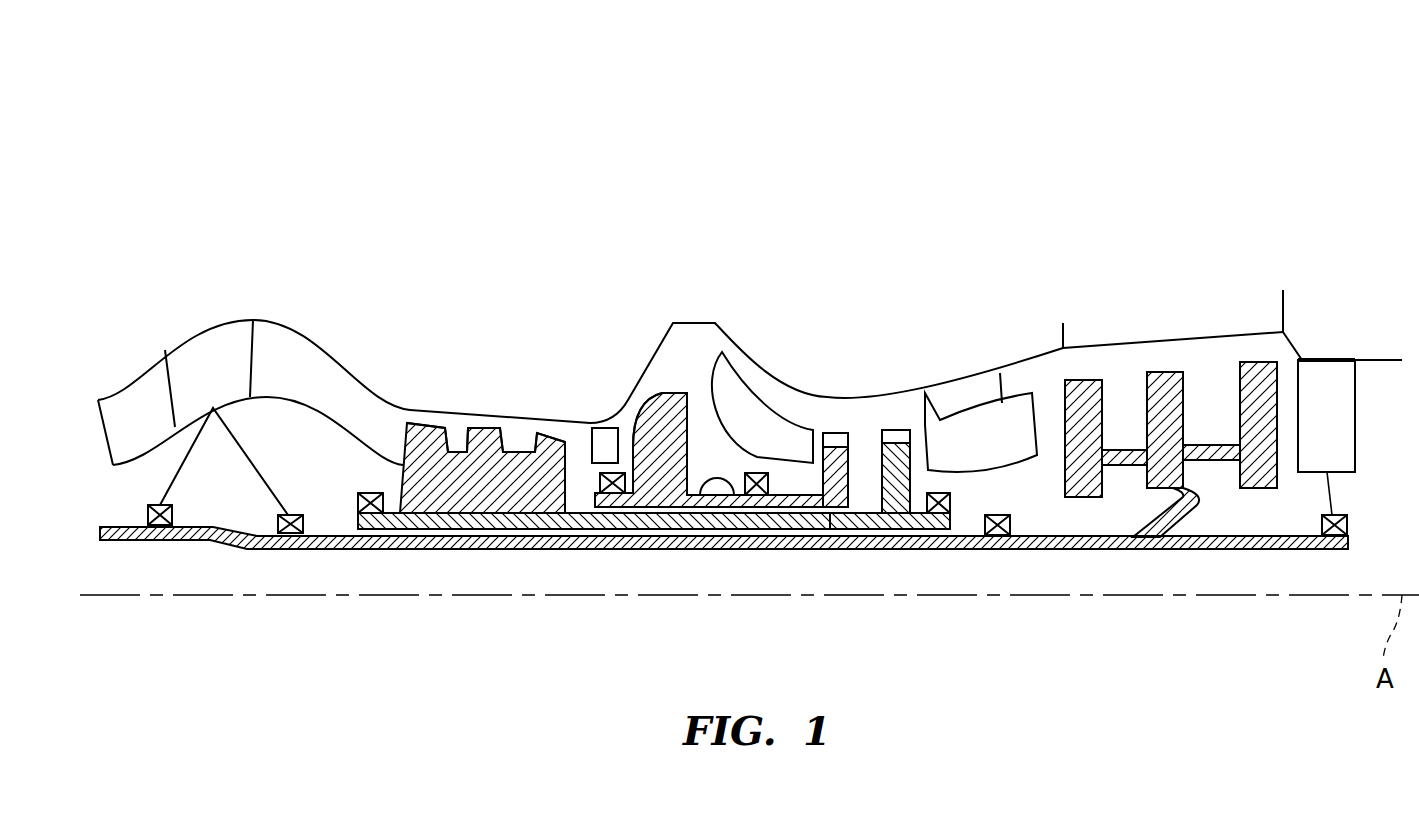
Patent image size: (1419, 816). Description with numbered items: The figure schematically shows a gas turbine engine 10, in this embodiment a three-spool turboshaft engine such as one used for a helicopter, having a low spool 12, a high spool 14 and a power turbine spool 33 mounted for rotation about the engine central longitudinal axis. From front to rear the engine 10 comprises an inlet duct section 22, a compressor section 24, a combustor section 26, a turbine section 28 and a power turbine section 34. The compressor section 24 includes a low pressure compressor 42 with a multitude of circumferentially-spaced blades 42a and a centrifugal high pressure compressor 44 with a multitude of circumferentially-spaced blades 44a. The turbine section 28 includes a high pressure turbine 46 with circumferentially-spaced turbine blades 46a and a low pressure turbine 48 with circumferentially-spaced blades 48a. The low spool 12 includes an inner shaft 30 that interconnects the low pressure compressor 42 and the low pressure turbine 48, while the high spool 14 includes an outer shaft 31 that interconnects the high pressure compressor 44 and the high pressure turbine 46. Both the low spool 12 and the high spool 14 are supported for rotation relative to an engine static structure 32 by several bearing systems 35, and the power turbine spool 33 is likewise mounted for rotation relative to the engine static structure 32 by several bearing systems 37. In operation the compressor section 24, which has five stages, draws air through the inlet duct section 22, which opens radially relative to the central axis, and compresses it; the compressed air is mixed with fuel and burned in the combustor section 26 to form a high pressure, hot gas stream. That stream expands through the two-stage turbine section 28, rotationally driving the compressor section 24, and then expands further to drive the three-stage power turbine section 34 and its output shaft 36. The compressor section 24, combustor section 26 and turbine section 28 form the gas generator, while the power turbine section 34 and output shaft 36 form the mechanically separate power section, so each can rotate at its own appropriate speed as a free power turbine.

The gas turbine engine 10 is at (1206, 118).
The low spool 12 is at (842, 550).
The high spool 14 is at (687, 530).
The inlet duct section 22 is at (405, 283).
The compressor section 24 is at (697, 283).
The combustor section 26 is at (697, 283).
The turbine section 28 is at (812, 283).
The inner shaft 30 is at (797, 531).
The outer shaft 31 is at (716, 500).
The engine static structure 32 is at (1285, 170).
The power turbine spool 33 is at (1145, 540).
The power turbine section 34 is at (1283, 283).
The bearing systems 35 is at (370, 515).
The output shaft 36 is at (893, 514).
The bearing systems 37 is at (160, 527).
The low pressure compressor 42 is at (483, 512).
The blades 42a is at (422, 440).
The centrifugal high pressure compressor 44 is at (662, 398).
The blades 44a is at (657, 427).
The high pressure turbine 46 is at (833, 440).
The turbine blades 46a is at (823, 457).
The low pressure turbine 48 is at (910, 455).
The blades 48a is at (897, 437).